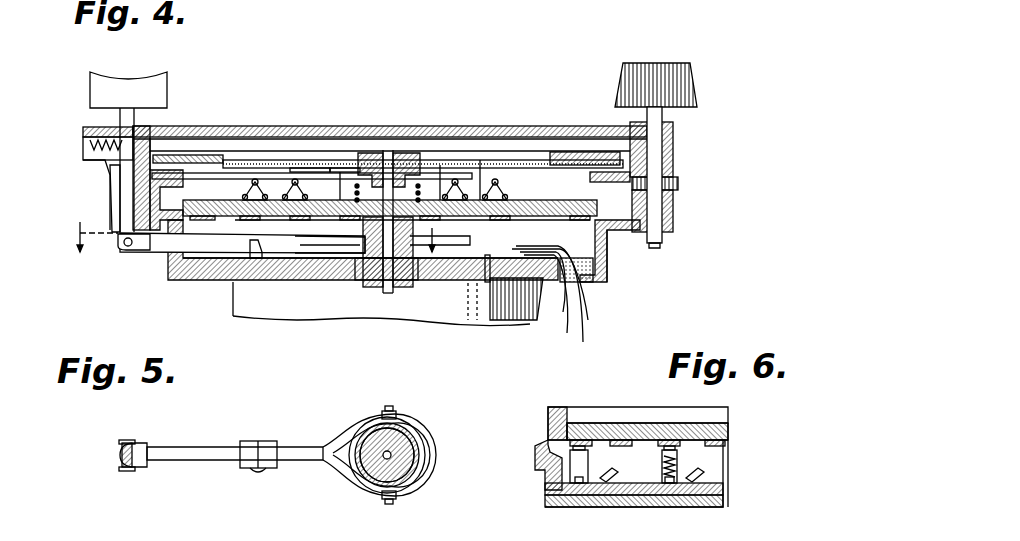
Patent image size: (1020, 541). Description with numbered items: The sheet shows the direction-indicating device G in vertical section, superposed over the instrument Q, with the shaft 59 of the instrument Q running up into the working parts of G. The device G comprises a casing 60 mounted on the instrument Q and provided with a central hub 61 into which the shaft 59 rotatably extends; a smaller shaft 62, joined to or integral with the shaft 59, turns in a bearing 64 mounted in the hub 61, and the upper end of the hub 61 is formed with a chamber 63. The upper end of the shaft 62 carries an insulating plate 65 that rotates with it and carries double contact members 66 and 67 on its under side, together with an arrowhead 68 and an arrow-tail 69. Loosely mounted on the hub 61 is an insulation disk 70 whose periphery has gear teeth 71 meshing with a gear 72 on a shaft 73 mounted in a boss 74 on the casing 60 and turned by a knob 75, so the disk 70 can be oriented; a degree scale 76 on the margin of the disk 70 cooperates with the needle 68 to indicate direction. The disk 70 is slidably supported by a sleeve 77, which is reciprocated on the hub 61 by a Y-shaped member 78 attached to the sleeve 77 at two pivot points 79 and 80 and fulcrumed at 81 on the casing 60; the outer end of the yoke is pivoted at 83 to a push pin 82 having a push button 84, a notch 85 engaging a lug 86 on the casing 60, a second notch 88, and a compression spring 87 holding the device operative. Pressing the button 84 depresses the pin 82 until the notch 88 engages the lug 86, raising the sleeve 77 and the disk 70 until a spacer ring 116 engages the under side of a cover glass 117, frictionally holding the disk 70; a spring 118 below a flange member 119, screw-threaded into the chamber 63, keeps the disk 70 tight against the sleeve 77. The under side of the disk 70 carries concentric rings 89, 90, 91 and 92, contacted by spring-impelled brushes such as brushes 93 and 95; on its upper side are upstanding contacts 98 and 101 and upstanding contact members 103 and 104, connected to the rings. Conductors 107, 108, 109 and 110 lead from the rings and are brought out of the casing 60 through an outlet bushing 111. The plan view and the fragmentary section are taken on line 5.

In FIG. 4, the push button 84 is at (100, 90).
In FIG. 4, the notch 88 is at (100, 128).
In FIG. 4, the notch 85 is at (90, 145).
In FIG. 4, the compression spring 87 is at (92, 158).
In FIG. 4, the push pin 82 is at (130, 170).
In FIG. 5, the push pin 82 is at (118, 462).
In FIG. 4, the gear teeth 71 is at (118, 185).
In FIG. 4, the device G is at (540, 125).
In FIG. 4, the cover glass 117 is at (238, 128).
In FIG. 4, the lug 86 is at (150, 140).
In FIG. 4, the arrow-tail 69 is at (190, 155).
In FIG. 4, the double contact member 66 is at (280, 160).
In FIG. 4, the plate 65 is at (312, 168).
In FIG. 4, the spacer ring 116 is at (160, 172).
In FIG. 4, the spring 118 is at (345, 168).
In FIG. 4, the upstanding contact member 103 is at (340, 172).
In FIG. 4, the arrowhead 68 is at (590, 152).
In FIG. 4, the degree scale 76 is at (612, 172).
In FIG. 4, the double contact member 67 is at (485, 160).
In FIG. 4, the chamber 63 is at (445, 165).
In FIG. 4, the upstanding contact 98 is at (255, 182).
In FIG. 4, the upstanding contact point 101 is at (510, 190).
In FIG. 4, the concentric ring 92 is at (320, 220).
In FIG. 6, the concentric ring 92 is at (728, 455).
In FIG. 4, the concentric ring 91 is at (283, 220).
In FIG. 6, the concentric ring 91 is at (700, 425).
In FIG. 4, the concentric ring 89 is at (190, 240).
In FIG. 6, the concentric ring 89 is at (545, 478).
In FIG. 4, the pivot 83 is at (124, 244).
In FIG. 5, the pivot 83 is at (130, 471).
In FIG. 4, the Y-shaped member 78 is at (200, 281).
In FIG. 5, the Y-shaped member 78 is at (216, 447).
In FIG. 4, the concentric ring 90 is at (235, 260).
In FIG. 6, the concentric ring 90 is at (645, 425).
In FIG. 4, the fulcrum 81 is at (256, 258).
In FIG. 5, the fulcrum 81 is at (260, 441).
In FIG. 4, the sleeve 77 is at (330, 244).
In FIG. 5, the sleeve 77 is at (352, 484).
In FIG. 4, the shaft 62 is at (388, 150).
In FIG. 5, the shaft 62 is at (414, 445).
In FIG. 4, the bearing 64 is at (420, 228).
In FIG. 5, the bearing 64 is at (410, 430).
In FIG. 4, the flange member 119 is at (418, 184).
In FIG. 4, the pivot point 79 is at (368, 270).
In FIG. 5, the pivot point 79 is at (392, 406).
In FIG. 4, the hub 61 is at (420, 280).
In FIG. 5, the hub 61 is at (418, 462).
In FIG. 4, the upstanding contact member 104 is at (452, 236).
In FIG. 4, the section line 5 is at (258, 237).
In FIG. 4, the insulation disk 70 is at (572, 218).
In FIG. 6, the insulation disk 70 is at (600, 425).
In FIG. 4, the casing 60 is at (608, 266).
In FIG. 6, the casing 60 is at (608, 508).
In FIG. 4, the shaft 73 is at (675, 213).
In FIG. 4, the boss 74 is at (675, 133).
In FIG. 4, the gear 72 is at (680, 183).
In FIG. 4, the knob 75 is at (692, 88).
In FIG. 4, the instrument Q is at (515, 321).
In FIG. 4, the conductor 107 is at (627, 347).
In FIG. 6, the conductor 107 is at (614, 470).
In FIG. 4, the conductor 108 is at (627, 320).
In FIG. 4, the conductor 109 is at (562, 306).
In FIG. 6, the conductor 109 is at (680, 508).
In FIG. 4, the conductor 110 is at (566, 318).
In FIG. 4, the outlet bushing 111 is at (594, 284).
In FIG. 4, the shaft 59 is at (381, 304).
In FIG. 5, the pivot point 80 is at (388, 504).
In FIG. 6, the spring impelled brush 93 is at (550, 508).
In FIG. 6, the spring impelled brush 95 is at (640, 508).